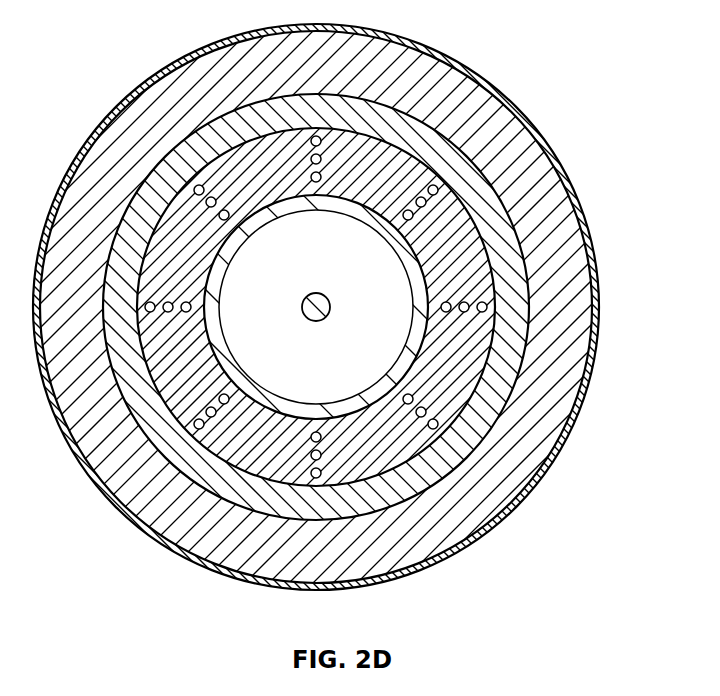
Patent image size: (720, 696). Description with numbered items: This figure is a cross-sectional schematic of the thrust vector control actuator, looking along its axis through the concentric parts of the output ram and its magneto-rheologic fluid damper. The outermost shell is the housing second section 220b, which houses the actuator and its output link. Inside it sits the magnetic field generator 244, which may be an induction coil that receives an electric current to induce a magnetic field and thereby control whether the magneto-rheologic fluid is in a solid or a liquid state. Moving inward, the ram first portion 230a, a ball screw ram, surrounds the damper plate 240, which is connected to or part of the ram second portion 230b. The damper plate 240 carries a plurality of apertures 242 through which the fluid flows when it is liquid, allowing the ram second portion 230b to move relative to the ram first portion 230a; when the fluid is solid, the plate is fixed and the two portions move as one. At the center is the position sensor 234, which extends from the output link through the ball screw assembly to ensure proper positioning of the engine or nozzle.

The housing second section 220b is at (598, 322).
The magnetic field generator 244 is at (554, 438).
The ram first portion 230a is at (497, 232).
The damper plate 240 is at (279, 181).
The apertures 242 is at (322, 165).
The ram second portion 230b is at (253, 222).
The position sensor 234 is at (310, 319).